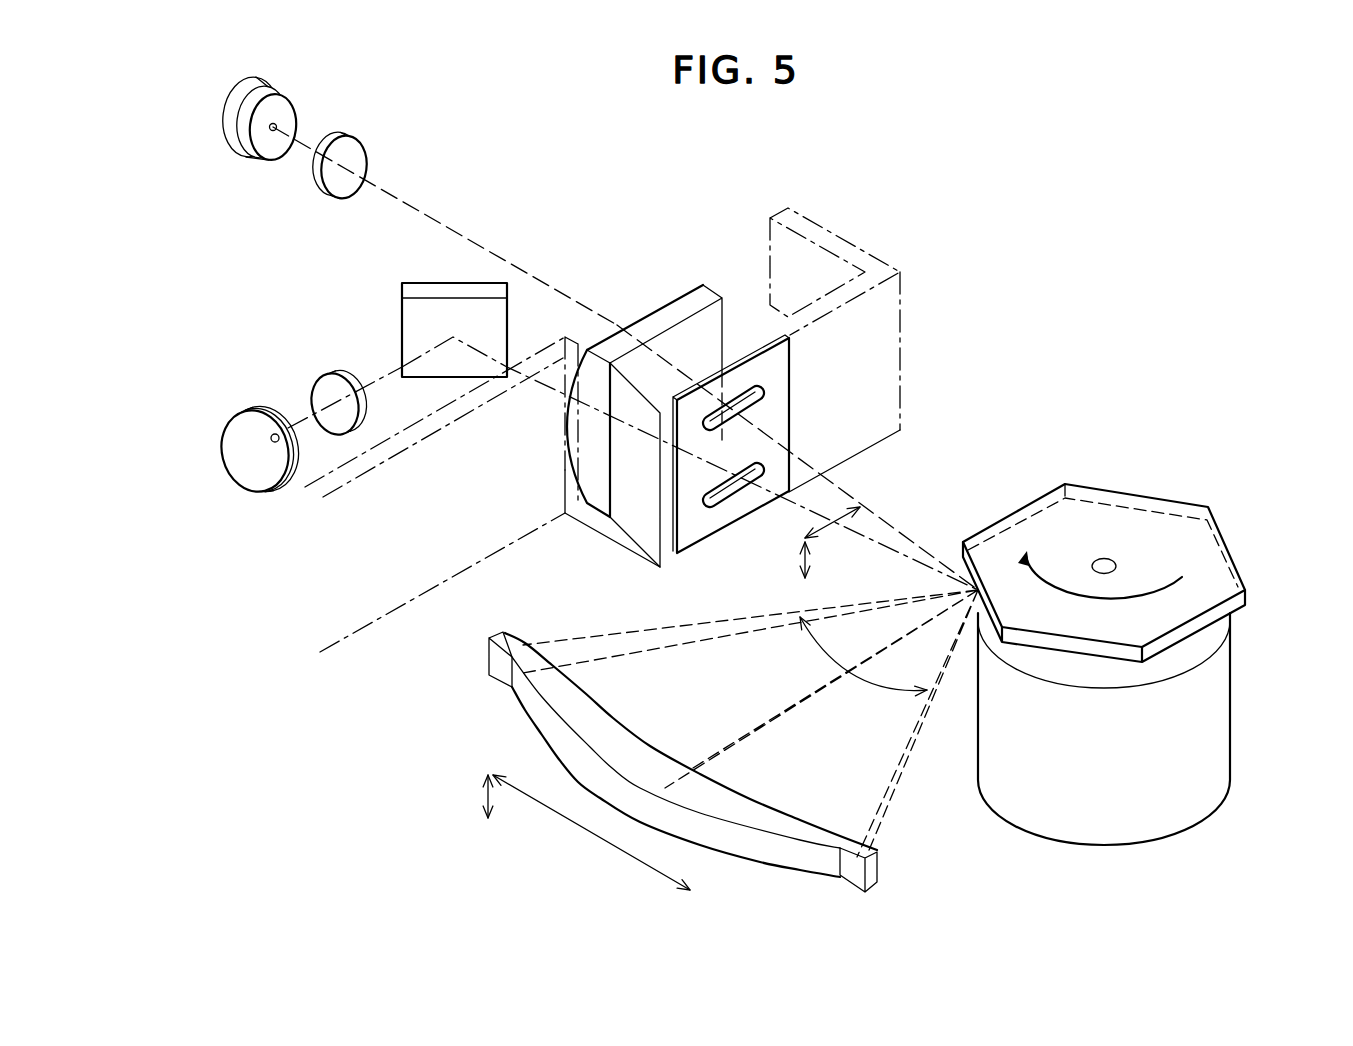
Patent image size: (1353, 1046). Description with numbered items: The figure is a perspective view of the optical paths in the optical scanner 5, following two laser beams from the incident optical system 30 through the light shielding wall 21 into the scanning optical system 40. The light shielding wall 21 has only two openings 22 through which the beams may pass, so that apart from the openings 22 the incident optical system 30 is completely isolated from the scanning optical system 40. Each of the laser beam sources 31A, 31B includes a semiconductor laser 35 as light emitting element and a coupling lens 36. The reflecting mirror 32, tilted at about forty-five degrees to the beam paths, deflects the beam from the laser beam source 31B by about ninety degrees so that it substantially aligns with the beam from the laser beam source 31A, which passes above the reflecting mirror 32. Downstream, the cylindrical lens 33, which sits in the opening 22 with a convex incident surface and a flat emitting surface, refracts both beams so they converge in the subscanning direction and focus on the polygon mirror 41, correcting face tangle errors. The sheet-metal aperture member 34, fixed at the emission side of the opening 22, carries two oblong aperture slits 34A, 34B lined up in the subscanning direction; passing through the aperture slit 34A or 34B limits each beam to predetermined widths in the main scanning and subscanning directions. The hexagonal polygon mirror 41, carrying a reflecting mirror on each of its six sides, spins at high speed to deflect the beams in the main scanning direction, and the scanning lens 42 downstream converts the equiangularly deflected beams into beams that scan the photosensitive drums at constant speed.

The optical scanning apparatus 5 is at (1168, 212).
The light shielding wall 21 is at (893, 318).
The opening 22 is at (743, 328).
The incident optical system 30 is at (602, 165).
The laser beam source 31A is at (437, 77).
The laser beam source 31B is at (323, 305).
The reflecting mirror 32 is at (404, 290).
The cylindrical lens 33 is at (656, 300).
The aperture member 34 is at (822, 461).
The aperture slit 34A is at (762, 405).
The aperture slit 34B is at (717, 513).
The semiconductor laser 35 is at (296, 103).
The coupling lens 36 is at (366, 147).
The scanning optical system 40 is at (1070, 404).
The polygon mirror 41 is at (1250, 588).
The scanning lens 42 is at (880, 870).